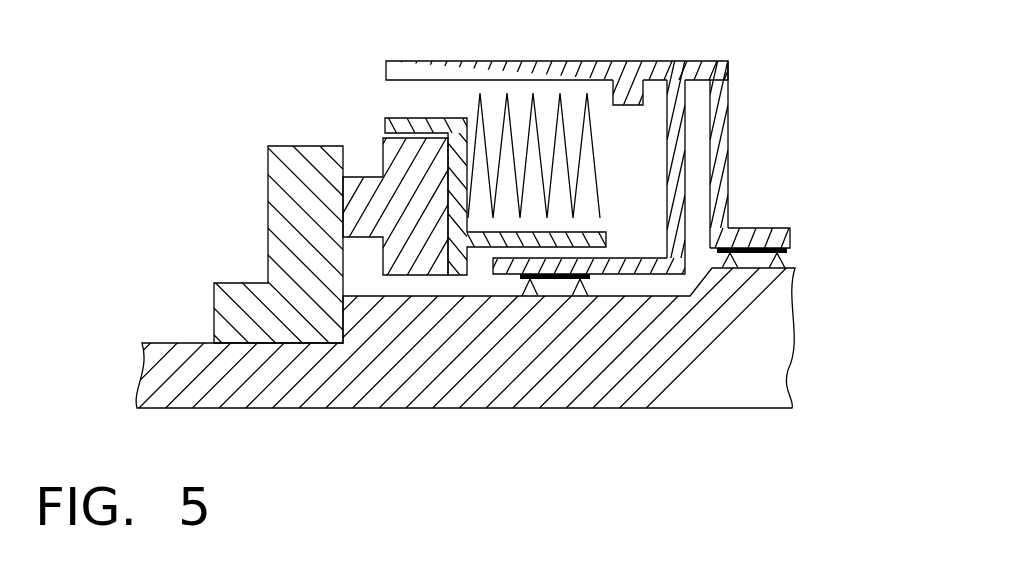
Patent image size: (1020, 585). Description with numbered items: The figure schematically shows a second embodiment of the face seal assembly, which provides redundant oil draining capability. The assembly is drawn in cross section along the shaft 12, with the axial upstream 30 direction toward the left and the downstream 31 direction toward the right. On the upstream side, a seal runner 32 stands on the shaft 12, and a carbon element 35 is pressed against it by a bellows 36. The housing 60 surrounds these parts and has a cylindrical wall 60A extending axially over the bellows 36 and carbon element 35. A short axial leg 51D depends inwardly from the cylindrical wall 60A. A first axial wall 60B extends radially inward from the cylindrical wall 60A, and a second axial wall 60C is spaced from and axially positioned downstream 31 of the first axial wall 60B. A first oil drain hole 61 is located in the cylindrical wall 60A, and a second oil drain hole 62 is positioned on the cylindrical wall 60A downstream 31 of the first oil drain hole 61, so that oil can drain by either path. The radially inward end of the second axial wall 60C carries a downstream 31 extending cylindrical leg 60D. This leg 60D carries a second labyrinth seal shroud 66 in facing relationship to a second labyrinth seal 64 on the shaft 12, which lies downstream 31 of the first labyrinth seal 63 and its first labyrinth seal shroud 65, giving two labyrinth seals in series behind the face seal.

The shaft 12 is at (182, 378).
The upstream direction 30 is at (190, 232).
The downstream direction 31 is at (852, 226).
The seal runner 32 is at (283, 177).
The carbon element 35 is at (388, 162).
The bellows 36 is at (473, 112).
The axial leg 51D is at (635, 61).
The housing 60 is at (615, 160).
The cylindrical wall 60A is at (447, 61).
The first axial wall 60B is at (678, 103).
The second axial wall 60C is at (722, 105).
The cylindrical leg 60D is at (745, 227).
The first oil drain hole 61 is at (668, 61).
The second oil drain hole 62 is at (720, 61).
The first labyrinth seal 63 is at (532, 283).
The second labyrinth seal 64 is at (767, 268).
The first labyrinth seal shroud 65 is at (588, 281).
The second labyrinth seal shroud 66 is at (788, 252).